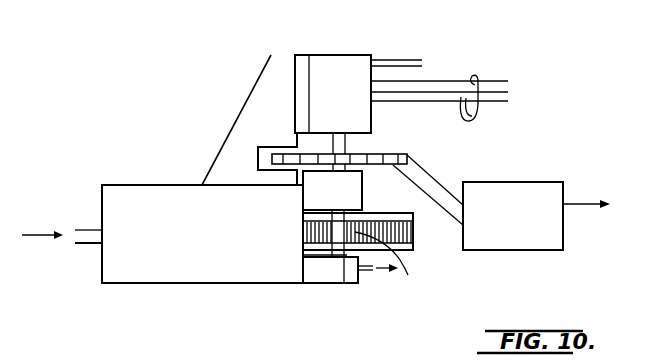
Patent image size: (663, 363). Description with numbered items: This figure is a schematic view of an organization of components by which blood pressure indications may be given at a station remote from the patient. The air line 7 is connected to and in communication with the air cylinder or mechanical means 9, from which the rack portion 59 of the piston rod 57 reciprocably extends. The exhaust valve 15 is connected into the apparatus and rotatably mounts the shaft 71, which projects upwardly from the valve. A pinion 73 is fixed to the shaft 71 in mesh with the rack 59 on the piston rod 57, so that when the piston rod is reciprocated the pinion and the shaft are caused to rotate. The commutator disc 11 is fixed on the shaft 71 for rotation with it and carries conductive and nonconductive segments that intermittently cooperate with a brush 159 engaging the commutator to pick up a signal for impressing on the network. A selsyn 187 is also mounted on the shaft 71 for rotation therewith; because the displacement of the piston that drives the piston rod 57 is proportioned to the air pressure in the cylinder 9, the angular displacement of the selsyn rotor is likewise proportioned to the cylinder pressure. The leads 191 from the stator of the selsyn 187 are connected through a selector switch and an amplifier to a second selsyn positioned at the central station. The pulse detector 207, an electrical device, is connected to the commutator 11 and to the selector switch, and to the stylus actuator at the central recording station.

The air line 7 is at (93, 238).
The air cylinder 9 is at (217, 273).
The commutator disc 11 is at (378, 153).
The exhaust valve 15 is at (318, 275).
The piston rod 57 is at (371, 213).
The rack 59 is at (395, 233).
The shaft 71 is at (343, 262).
The pinion 73 is at (392, 258).
The brush 159 is at (407, 156).
The selsyn 187 is at (345, 68).
The leads 191 is at (444, 101).
The pulse detector 207 is at (535, 193).